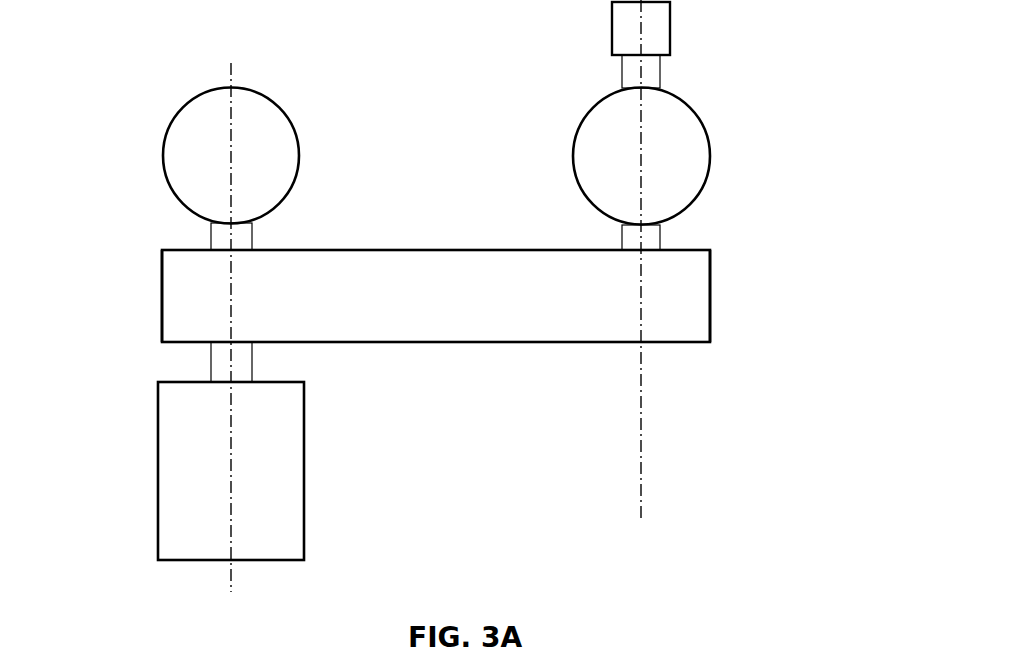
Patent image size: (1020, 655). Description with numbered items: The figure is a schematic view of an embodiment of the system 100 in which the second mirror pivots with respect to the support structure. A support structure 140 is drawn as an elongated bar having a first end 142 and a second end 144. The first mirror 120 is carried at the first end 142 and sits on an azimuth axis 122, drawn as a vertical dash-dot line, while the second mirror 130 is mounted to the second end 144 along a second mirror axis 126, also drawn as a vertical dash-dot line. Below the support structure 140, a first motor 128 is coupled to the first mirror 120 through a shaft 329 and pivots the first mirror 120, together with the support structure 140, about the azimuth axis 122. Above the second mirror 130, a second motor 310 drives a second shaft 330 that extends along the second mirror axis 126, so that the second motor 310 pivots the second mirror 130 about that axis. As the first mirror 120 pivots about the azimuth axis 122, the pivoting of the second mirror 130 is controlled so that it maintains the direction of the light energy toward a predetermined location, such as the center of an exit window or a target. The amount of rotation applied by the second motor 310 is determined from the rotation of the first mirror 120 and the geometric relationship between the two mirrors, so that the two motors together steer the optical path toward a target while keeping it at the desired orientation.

The system 100 is at (148, 56).
The first mirror 120 is at (300, 156).
The second mirror 130 is at (711, 158).
The support structure 140 is at (436, 343).
The first end of the support structure 142 is at (142, 298).
The second end of the support structure 144 is at (737, 297).
The azimuth axis 122 is at (232, 564).
The second mirror axis 126 is at (642, 465).
The first motor 128 is at (305, 472).
The second motor 310 is at (671, 29).
The shaft 329 is at (210, 373).
The second shaft 330 is at (661, 72).